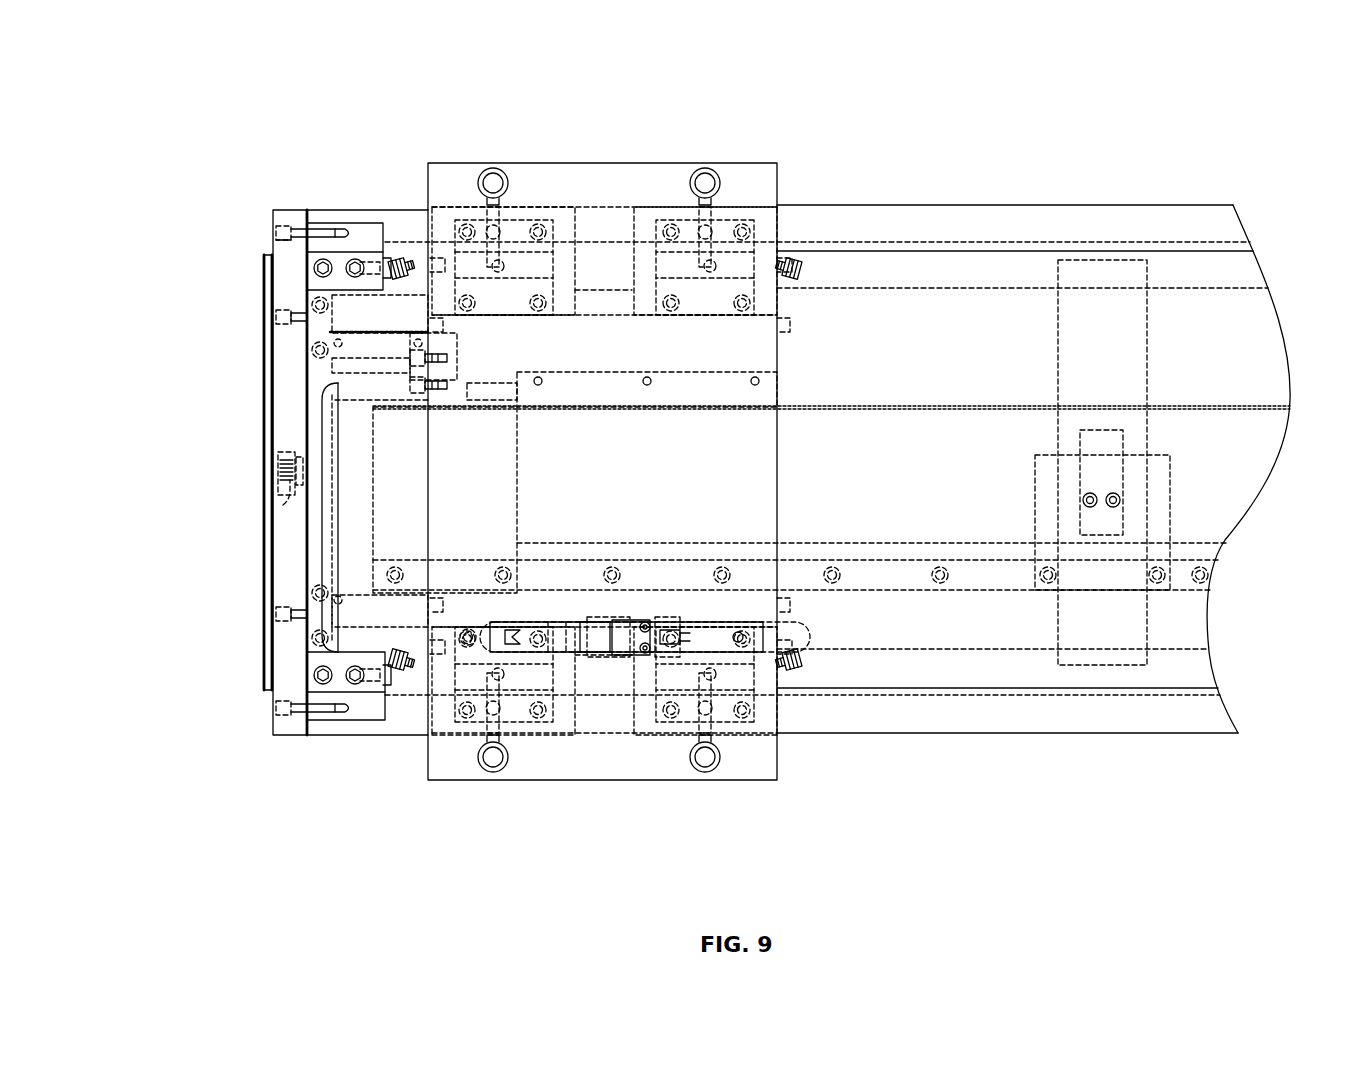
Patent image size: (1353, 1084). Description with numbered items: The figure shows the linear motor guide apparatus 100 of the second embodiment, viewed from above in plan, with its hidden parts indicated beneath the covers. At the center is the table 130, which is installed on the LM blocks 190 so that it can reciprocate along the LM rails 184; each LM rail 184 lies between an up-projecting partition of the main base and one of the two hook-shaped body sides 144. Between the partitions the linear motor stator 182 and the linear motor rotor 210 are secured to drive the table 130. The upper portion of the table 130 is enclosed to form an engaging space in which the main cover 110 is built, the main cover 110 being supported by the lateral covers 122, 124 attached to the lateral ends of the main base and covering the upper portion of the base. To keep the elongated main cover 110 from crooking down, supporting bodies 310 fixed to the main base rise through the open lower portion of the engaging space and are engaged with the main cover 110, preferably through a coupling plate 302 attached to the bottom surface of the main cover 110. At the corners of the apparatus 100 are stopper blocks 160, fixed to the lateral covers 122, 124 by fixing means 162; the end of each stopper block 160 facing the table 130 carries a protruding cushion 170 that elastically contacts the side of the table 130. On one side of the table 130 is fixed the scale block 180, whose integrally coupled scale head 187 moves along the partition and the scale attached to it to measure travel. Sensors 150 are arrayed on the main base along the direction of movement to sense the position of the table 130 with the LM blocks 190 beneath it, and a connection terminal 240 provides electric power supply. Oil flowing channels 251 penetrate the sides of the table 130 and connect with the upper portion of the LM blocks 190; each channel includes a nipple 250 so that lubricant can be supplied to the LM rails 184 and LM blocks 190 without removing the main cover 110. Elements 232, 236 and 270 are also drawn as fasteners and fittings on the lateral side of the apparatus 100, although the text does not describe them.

The linear motor guide apparatus 100 is at (232, 128).
The main cover 110 is at (1241, 308).
The lateral cover 122 is at (263, 393).
The lateral cover 124 is at (183, 472).
The table 130 is at (607, 185).
The body side 144 is at (1101, 205).
The sensor 150 is at (745, 625).
The stopper block 160 is at (377, 222).
The fixing means 162 is at (300, 229).
The cushion 170 is at (370, 225).
The scale block 180 is at (327, 404).
The linear motor stator 182 is at (760, 372).
The LM rail 184 is at (971, 250).
The scale head 187 is at (357, 380).
The LM block 190 is at (760, 318).
The linear motor rotor 210 is at (963, 425).
The adjusting bolt 232 is at (278, 312).
The lock bolt 236 is at (283, 222).
The connection terminal 240 is at (283, 505).
The nipple 250 is at (413, 258).
The oil flowing channel 251 is at (505, 217).
The sensor bracket 270 is at (297, 440).
The coupling plate 302 is at (1148, 265).
The supporting body 310 is at (1125, 443).